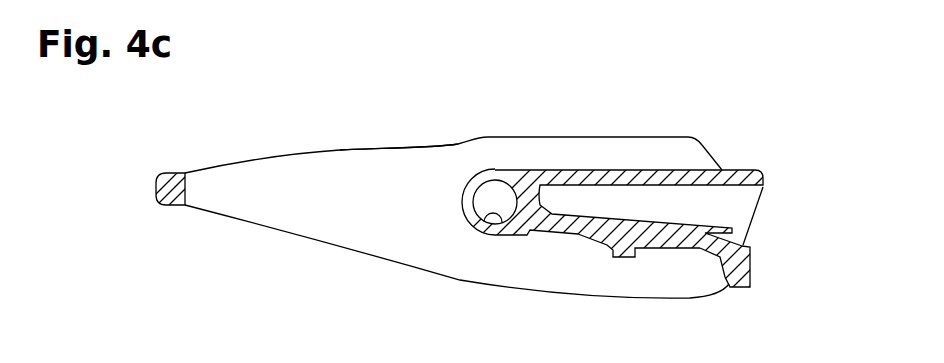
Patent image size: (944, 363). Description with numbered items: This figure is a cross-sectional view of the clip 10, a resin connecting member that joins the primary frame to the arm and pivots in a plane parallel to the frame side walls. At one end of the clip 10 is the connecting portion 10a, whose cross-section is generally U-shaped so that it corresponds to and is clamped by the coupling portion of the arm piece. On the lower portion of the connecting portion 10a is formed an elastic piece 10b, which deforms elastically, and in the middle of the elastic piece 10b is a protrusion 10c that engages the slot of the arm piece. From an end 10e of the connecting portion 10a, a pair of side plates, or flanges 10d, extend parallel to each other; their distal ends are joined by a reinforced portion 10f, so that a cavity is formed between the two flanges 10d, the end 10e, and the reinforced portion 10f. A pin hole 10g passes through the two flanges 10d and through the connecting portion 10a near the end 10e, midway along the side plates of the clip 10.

The clip 10 is at (716, 110).
The connecting portion 10a is at (582, 170).
The elastic piece 10b is at (668, 240).
The protrusion 10c is at (618, 250).
The flanges 10d is at (356, 152).
The end of the connecting portion 10e is at (460, 210).
The reinforced portion 10f is at (173, 177).
The pin hole 10g is at (497, 237).